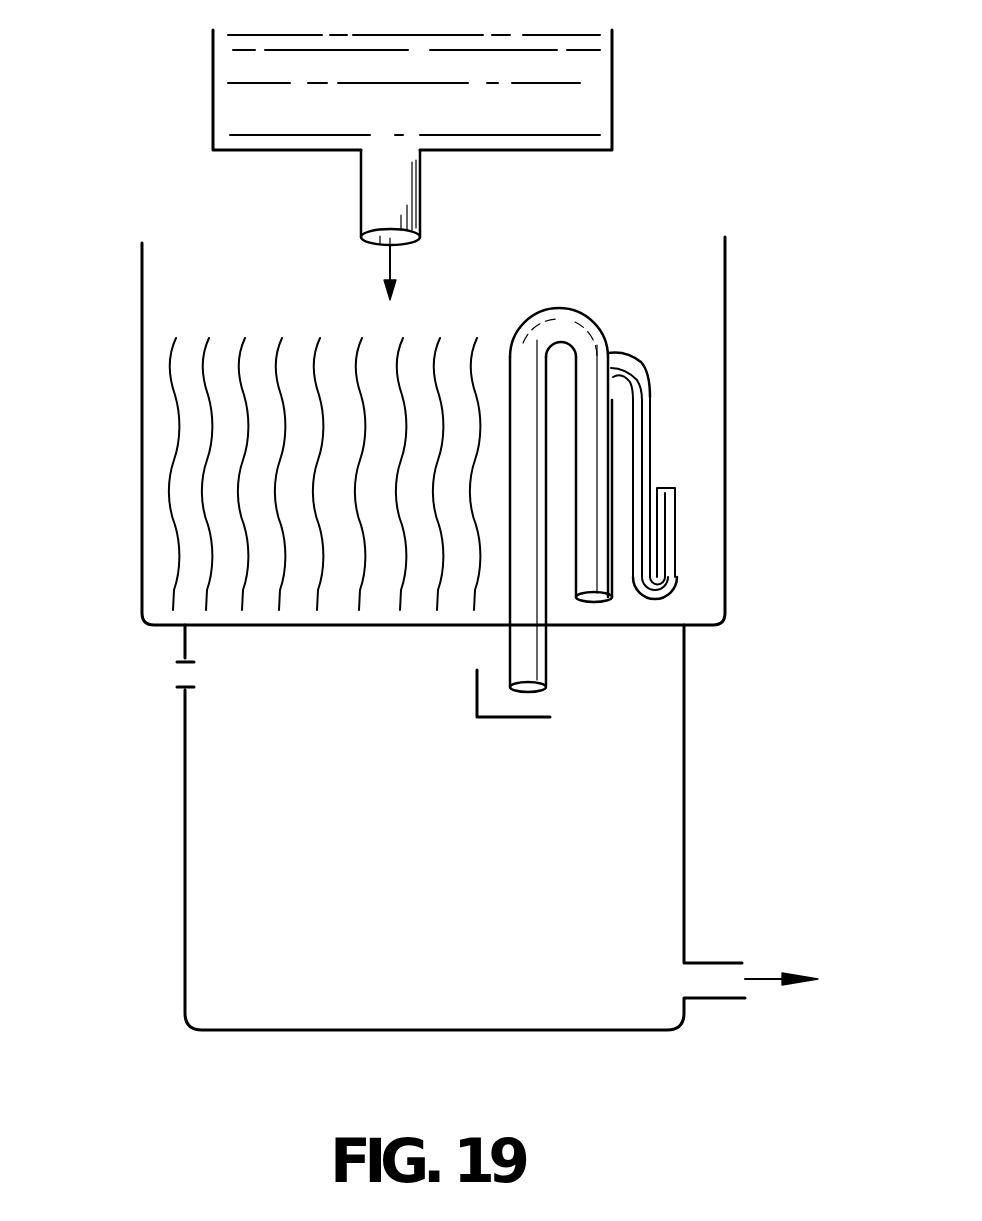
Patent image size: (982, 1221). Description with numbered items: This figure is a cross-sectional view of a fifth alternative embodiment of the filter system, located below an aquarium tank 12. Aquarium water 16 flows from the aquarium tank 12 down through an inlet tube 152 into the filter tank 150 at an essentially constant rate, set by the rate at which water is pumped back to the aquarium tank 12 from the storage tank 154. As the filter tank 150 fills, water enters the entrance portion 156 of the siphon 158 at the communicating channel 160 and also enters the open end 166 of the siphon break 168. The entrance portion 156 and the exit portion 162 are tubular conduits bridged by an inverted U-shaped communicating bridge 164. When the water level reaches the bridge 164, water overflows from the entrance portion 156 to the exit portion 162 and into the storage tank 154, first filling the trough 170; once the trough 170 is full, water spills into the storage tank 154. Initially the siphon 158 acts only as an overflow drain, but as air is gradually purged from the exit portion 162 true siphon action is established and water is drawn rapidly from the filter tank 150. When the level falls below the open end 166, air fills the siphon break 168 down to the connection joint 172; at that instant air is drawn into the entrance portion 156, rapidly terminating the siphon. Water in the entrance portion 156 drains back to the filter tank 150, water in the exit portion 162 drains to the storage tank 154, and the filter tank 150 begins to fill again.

The aquarium tank 12 is at (212, 107).
The aquarium water 16 is at (437, 114).
The inlet tube 152 is at (377, 183).
The filter tank 150 is at (140, 472).
The storage tank 154 is at (186, 857).
The exit portion 162 is at (523, 567).
The U-shaped communicating bridge 164 is at (528, 318).
The entrance portion 156 is at (598, 530).
The communicating channel 160 is at (592, 603).
The siphon 158 is at (614, 329).
The siphon break 168 is at (650, 458).
The open end 166 is at (678, 488).
The connection joint 172 is at (653, 591).
The trough 170 is at (478, 688).